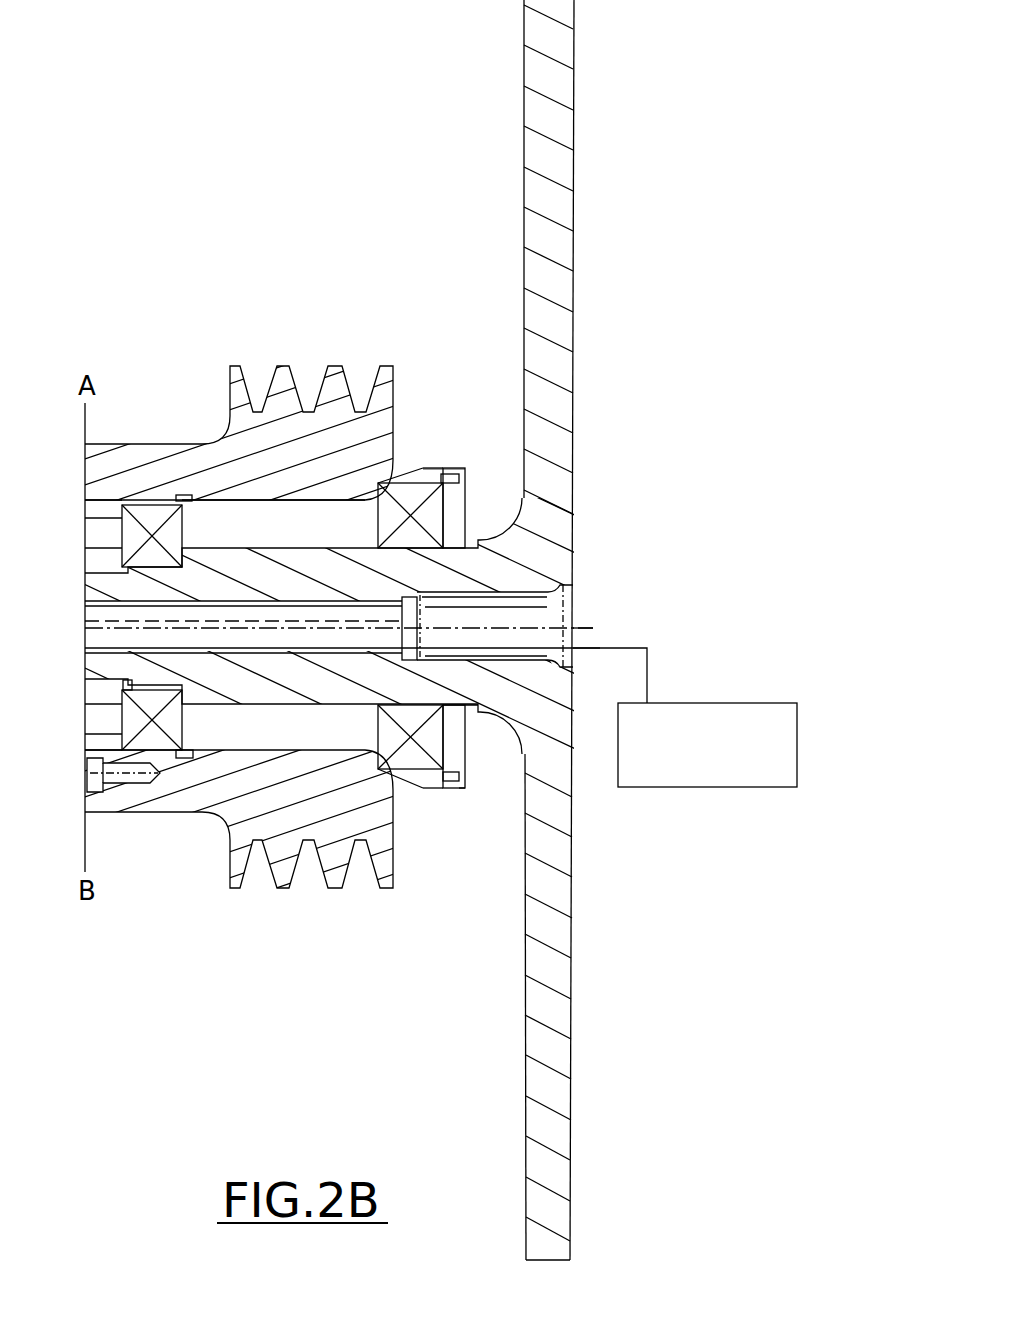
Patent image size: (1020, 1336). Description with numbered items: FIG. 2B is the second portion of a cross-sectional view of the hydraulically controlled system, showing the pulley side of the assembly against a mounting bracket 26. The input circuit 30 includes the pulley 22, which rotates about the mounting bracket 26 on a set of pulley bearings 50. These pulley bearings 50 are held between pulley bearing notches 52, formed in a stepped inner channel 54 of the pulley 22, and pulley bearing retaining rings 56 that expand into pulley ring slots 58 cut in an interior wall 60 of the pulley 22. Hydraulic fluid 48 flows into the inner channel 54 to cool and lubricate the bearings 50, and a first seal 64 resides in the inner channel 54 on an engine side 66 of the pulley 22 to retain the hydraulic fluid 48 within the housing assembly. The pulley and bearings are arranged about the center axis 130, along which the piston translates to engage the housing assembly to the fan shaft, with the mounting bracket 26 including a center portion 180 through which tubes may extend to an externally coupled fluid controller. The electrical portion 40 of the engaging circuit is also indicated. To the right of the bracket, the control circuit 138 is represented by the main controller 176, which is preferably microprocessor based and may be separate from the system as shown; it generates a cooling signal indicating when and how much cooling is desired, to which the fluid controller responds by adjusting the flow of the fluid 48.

The mounting bracket 26 is at (522, 182).
The pulley 22 is at (230, 382).
The hydraulic fluid 48 is at (260, 506).
The pulley bearing notches 52 is at (374, 490).
The pulley ring slots 58 is at (186, 496).
The pulley bearings 50 is at (415, 483).
The interior wall 60 is at (302, 506).
The input circuit 30 is at (427, 409).
The center portion 180 is at (333, 598).
The center axis 130 is at (593, 627).
The electrical portion 40 is at (631, 617).
The main controller 176 is at (599, 715).
The control circuit 138 is at (597, 675).
The engine side 66 is at (473, 718).
The first seal 64 is at (466, 760).
The stepped inner channel 54 is at (312, 752).
The pulley bearing retaining rings 56 is at (190, 738).